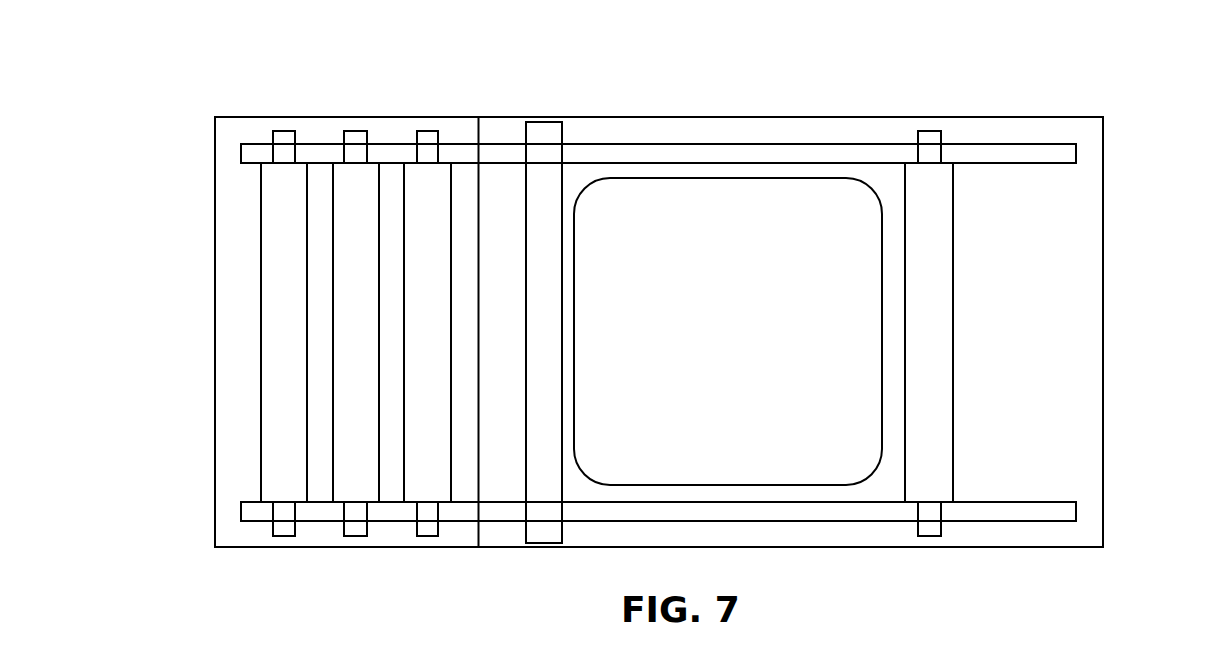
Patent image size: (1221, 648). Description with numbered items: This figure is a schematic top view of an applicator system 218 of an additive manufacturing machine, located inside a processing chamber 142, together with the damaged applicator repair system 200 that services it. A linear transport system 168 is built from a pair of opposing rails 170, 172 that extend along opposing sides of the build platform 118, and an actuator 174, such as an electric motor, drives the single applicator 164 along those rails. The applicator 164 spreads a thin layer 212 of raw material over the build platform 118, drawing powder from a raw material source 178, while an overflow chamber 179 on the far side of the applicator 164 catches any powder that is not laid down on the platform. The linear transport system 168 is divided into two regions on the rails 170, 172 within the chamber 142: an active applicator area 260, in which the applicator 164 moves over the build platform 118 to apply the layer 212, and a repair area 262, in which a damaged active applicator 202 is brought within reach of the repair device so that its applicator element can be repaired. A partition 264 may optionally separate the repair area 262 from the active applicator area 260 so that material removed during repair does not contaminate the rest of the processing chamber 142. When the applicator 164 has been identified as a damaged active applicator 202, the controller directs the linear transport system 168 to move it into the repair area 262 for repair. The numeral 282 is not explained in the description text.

The build platform 118 is at (855, 493).
The processing chamber 142 is at (215, 233).
The applicator 164 is at (993, 332).
The linear transport system 168 is at (718, 123).
The rail 170 is at (757, 152).
The rail 172 is at (500, 508).
The actuator 174 is at (936, 302).
The raw material source 178 is at (948, 647).
The overflow chamber 179 is at (552, 127).
The damaged applicator repair system 200 is at (368, 283).
The damaged active applicator 202 is at (953, 277).
The layer 212 is at (750, 387).
The applicator system 218 is at (669, 305).
The active applicator area 260 is at (803, 304).
The repair area 262 is at (463, 57).
The partition 264 is at (480, 117).
The bracket 282 is at (372, 644).